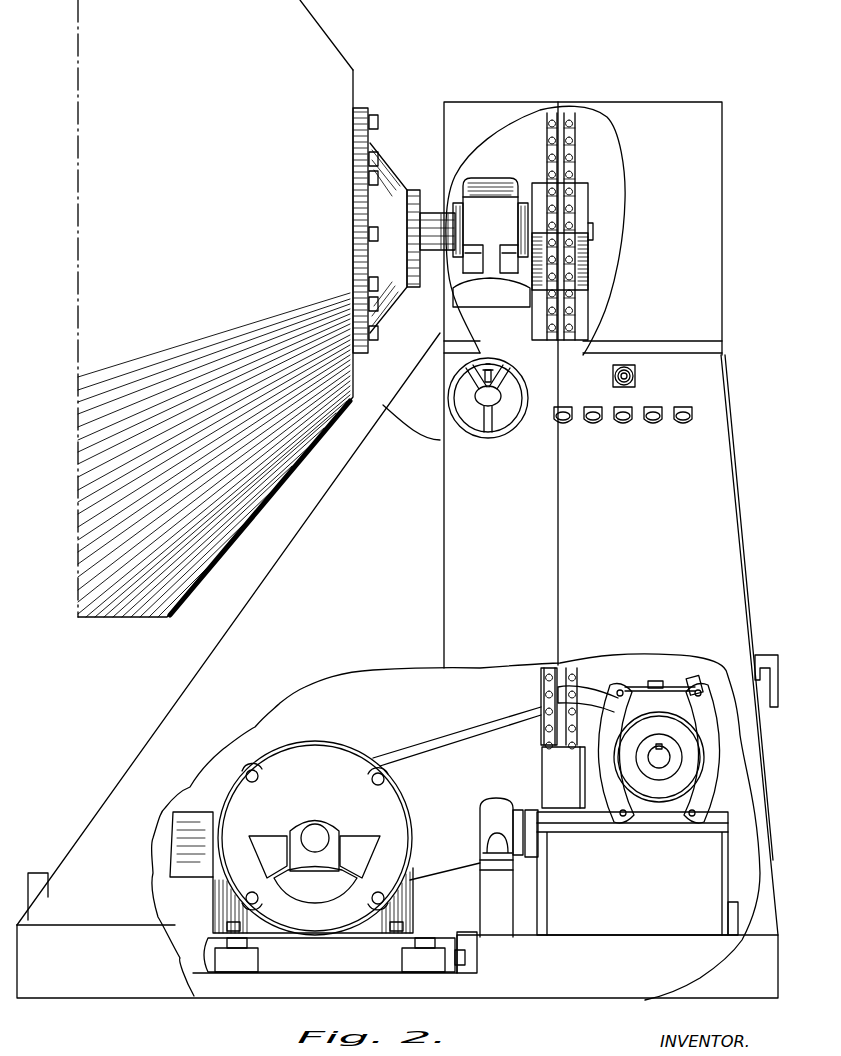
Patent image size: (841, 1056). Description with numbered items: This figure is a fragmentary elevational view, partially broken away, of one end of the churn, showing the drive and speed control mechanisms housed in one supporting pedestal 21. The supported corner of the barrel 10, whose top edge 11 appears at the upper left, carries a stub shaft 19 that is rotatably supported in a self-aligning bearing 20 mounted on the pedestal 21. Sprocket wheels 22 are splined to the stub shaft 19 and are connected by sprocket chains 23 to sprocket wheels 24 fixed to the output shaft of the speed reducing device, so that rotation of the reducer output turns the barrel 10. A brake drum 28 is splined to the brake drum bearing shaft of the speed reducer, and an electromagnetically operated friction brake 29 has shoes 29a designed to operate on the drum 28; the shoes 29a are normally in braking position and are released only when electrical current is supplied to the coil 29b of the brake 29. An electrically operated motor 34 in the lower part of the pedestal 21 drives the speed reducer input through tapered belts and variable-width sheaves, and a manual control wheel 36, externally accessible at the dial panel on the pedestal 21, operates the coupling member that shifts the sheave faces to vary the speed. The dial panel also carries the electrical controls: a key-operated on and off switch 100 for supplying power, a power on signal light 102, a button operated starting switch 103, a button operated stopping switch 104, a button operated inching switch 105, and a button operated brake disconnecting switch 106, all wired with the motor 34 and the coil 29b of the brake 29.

The barrel 10 is at (290, 65).
The frame top edge 11 is at (313, 17).
The stub shaft 19 is at (432, 223).
The self-aligning bearing 20 is at (488, 178).
The pedestal 21 is at (397, 551).
The sprocket wheels 22 is at (563, 185).
The sprocket chains 23 is at (569, 192).
The sprocket wheels 24 is at (541, 700).
The brake drum 28 is at (677, 735).
The electromagnetically operated friction brake 29 is at (659, 668).
The shoes 29a is at (717, 768).
The coil 29b is at (548, 772).
The electrically operated motor 34 is at (335, 757).
The manual control wheel 36 is at (498, 438).
The key-operated "on" and "off" switch 100 is at (636, 374).
The power "on" signal light 102 is at (563, 423).
The button operated starting switch 103 is at (593, 423).
The button operated stopping switch 104 is at (623, 423).
The button operated inching switch 105 is at (653, 423).
The button operated brake disconnecting switch 106 is at (683, 423).